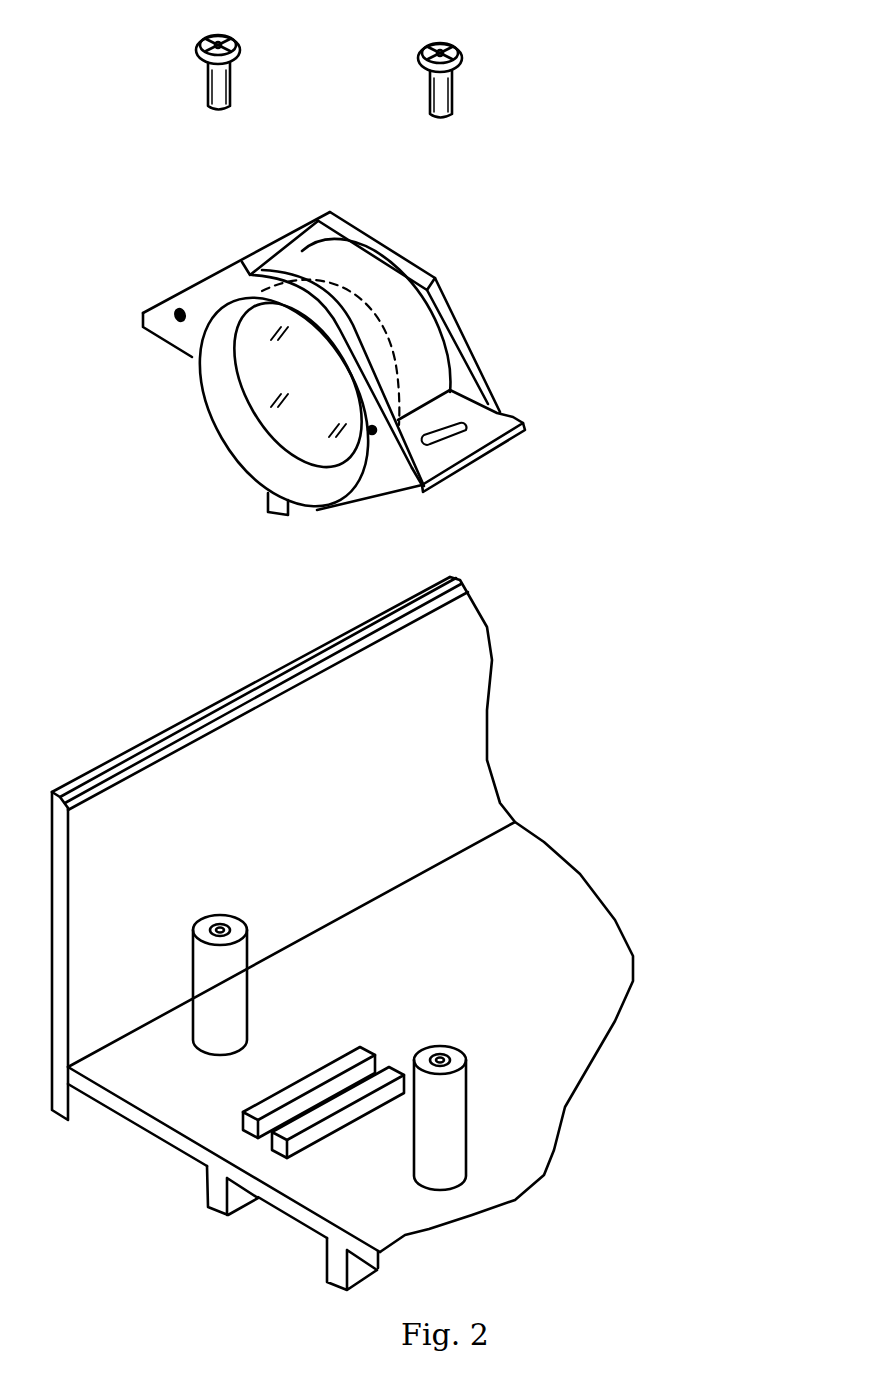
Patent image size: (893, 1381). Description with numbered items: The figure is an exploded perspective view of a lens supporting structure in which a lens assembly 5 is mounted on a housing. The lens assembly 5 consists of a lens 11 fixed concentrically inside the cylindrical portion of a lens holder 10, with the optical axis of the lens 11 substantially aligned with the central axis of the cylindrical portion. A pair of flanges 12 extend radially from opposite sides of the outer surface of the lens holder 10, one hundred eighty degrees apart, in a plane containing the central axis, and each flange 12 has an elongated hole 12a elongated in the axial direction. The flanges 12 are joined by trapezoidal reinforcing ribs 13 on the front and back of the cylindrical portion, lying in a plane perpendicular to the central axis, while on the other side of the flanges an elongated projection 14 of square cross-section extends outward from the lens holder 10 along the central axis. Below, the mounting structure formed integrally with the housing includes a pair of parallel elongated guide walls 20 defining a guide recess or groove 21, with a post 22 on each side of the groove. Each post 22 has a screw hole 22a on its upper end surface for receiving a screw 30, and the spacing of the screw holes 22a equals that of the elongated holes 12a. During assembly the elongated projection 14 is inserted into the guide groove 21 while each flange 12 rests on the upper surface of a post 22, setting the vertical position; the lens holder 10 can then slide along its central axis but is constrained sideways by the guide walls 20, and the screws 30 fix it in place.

The lens assembly 5 is at (347, 362).
The lens holder 10 is at (344, 387).
The lens 11 is at (297, 430).
The flange 12 is at (483, 433).
The elongated hole 12a is at (446, 446).
The trapezoidal reinforcing rib 13 is at (197, 293).
The elongated projection 14 is at (278, 514).
The guide wall 20 is at (330, 1058).
The guide recess or groove 21 is at (250, 1108).
The post 22 is at (384, 1030).
The screw hole 22a is at (222, 925).
The screw 30 is at (243, 46).